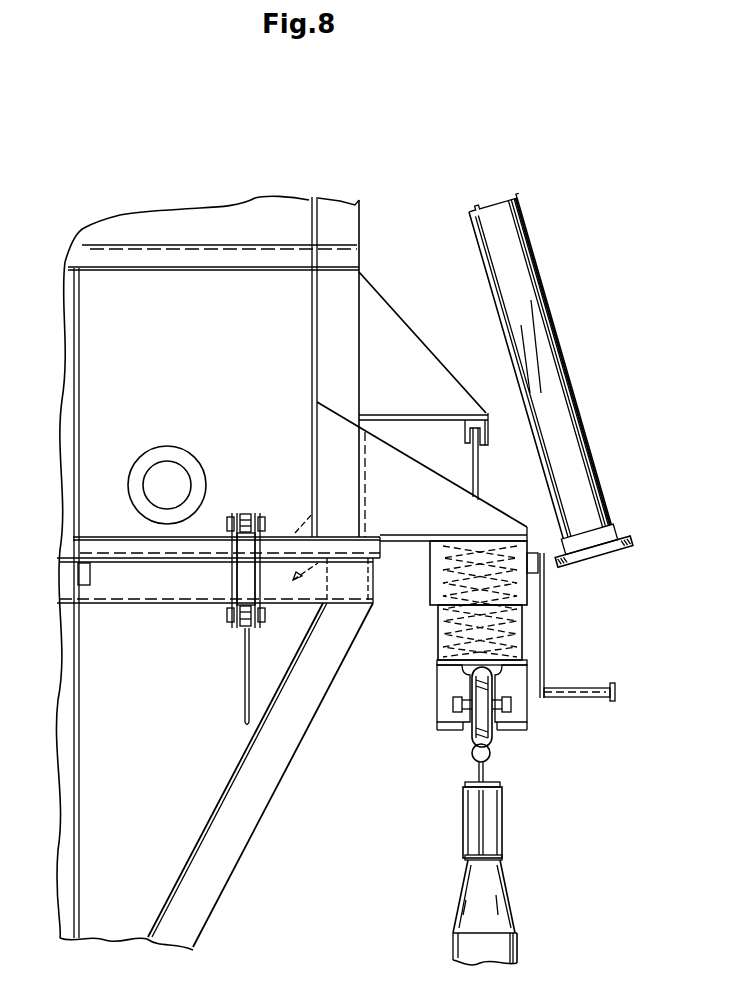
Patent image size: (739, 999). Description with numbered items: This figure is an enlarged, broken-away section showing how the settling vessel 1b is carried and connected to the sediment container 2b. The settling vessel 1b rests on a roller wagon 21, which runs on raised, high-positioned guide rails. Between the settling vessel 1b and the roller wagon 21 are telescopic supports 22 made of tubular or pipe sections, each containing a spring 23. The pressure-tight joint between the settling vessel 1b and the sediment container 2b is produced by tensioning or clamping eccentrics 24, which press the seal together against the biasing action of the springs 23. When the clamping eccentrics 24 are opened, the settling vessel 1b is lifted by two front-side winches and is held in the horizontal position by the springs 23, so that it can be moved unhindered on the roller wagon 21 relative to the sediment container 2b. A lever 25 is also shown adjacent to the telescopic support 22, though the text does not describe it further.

The settling vessel 1b is at (340, 230).
The sediment container 2b is at (250, 805).
The roller wagon 21 is at (455, 707).
The telescopic support 22 is at (433, 583).
The spring 23 is at (503, 618).
The tensioning or clamping eccentric 24 is at (235, 580).
The lever 25 is at (542, 668).